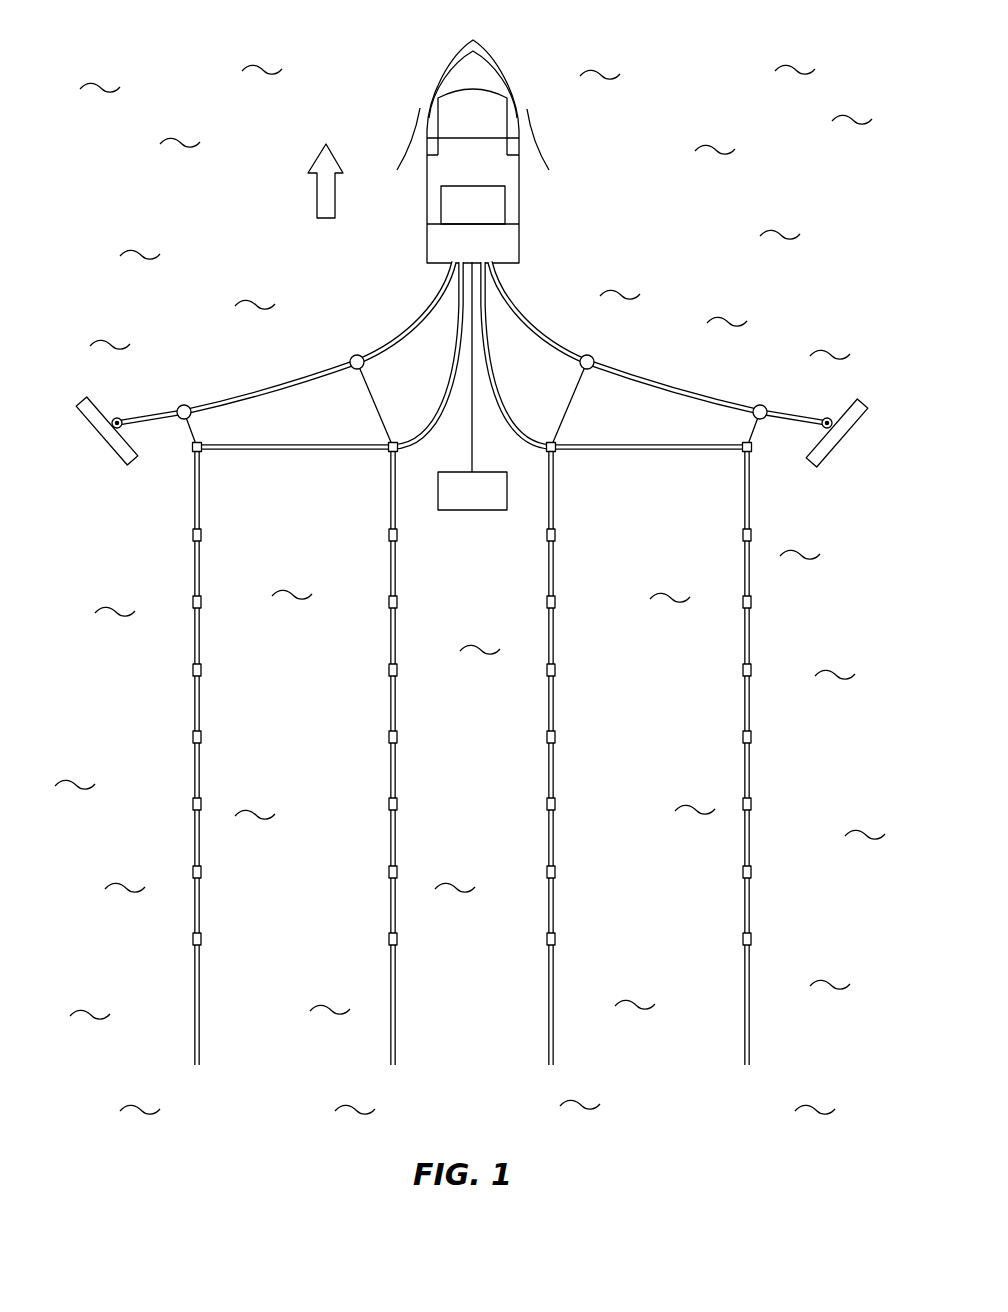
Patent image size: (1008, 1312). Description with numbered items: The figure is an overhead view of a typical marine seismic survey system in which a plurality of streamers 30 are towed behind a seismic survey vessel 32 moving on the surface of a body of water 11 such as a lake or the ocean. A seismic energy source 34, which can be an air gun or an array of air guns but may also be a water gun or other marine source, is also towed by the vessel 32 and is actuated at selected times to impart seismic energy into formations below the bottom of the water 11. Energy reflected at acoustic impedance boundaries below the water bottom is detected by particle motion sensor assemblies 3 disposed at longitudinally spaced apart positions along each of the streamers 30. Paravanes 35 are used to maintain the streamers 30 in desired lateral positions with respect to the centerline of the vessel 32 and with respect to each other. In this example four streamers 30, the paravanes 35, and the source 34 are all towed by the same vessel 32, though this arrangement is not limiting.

The body of water 11 is at (474, 577).
The particle motion sensor assembly 3 is at (193, 533).
The streamer 30 is at (200, 773).
The seismic survey vessel 32 is at (520, 213).
The seismic energy source 34 is at (472, 510).
The paravane 35 is at (98, 437).